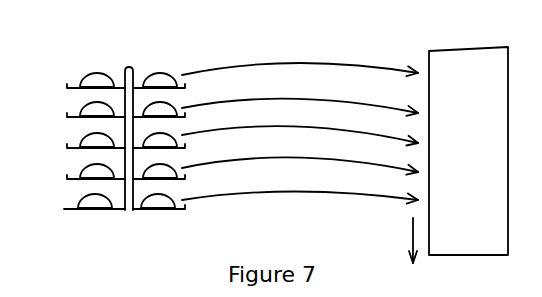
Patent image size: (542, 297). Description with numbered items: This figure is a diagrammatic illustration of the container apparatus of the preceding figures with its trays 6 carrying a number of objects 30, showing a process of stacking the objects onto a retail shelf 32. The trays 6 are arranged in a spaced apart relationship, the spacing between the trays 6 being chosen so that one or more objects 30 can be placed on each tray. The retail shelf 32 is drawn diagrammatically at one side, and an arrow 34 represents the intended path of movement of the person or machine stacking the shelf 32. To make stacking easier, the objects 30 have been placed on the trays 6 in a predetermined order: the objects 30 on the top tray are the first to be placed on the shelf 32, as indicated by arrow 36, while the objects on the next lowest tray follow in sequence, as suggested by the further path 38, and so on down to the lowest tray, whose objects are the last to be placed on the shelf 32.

The tray 6 is at (66, 88).
The object 30 is at (101, 72).
The retail shelf 32 is at (468, 151).
The arrow 34 is at (398, 240).
The arrow 36 is at (300, 60).
The radiation path 38 is at (300, 99).